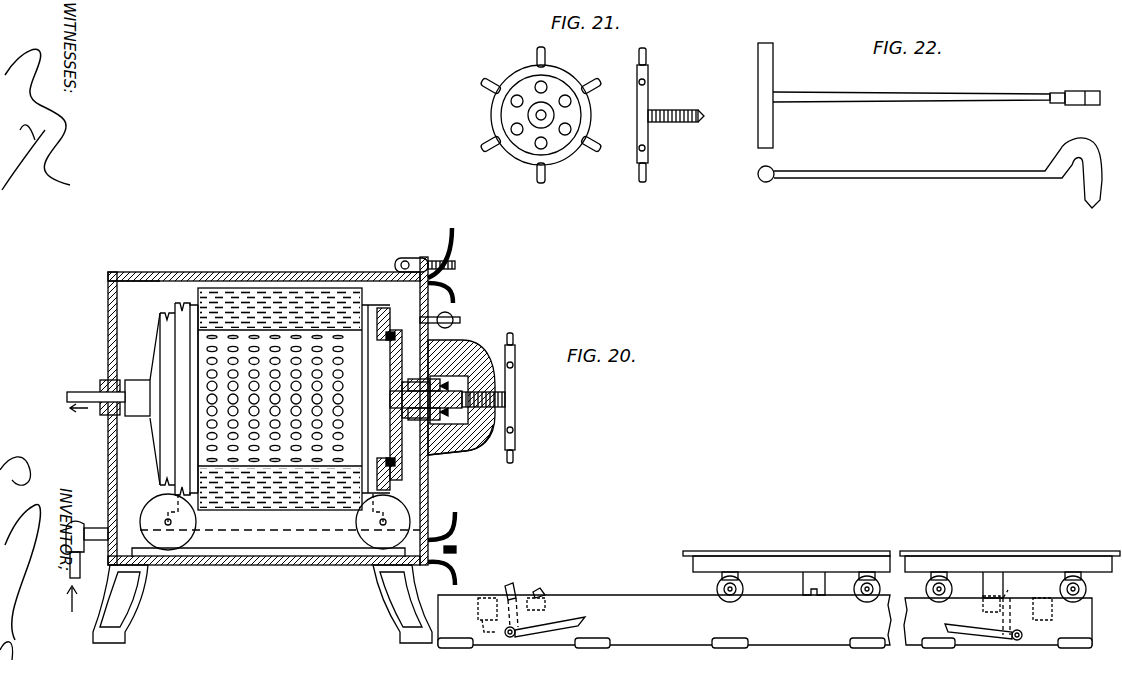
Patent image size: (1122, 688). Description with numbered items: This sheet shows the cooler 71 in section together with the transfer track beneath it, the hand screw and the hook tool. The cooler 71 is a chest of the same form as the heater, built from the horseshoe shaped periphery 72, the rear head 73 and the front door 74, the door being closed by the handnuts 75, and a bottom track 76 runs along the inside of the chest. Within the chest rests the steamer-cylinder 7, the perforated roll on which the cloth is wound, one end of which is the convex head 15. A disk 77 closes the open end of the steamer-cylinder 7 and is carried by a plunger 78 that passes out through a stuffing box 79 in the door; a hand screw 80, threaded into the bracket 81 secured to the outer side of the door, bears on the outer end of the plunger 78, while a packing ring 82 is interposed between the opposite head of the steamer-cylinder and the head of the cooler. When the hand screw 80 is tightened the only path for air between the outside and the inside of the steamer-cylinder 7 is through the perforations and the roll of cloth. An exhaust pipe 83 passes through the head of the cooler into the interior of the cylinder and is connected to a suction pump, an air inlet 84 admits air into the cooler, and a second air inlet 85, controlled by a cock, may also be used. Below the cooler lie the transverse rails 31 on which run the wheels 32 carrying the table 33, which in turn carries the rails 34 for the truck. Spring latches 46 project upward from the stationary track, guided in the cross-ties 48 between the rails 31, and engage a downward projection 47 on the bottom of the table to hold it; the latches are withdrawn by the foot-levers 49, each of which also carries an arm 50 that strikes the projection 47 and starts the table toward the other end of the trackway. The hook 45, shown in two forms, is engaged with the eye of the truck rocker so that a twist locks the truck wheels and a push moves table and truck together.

In FIG. 20, the steamer-cylinder 7 is at (294, 399).
In FIG. 20, the head 15 is at (153, 420).
In FIG. 20, the rails 31 is at (765, 621).
In FIG. 20, the wheels 32 is at (744, 587).
In FIG. 20, the table 33 is at (902, 565).
In FIG. 20, the rails 34 is at (825, 556).
In FIG. 22, the hook 45 is at (930, 125).
In FIG. 20, the spring latches 46 is at (541, 593).
In FIG. 20, the downward projection 47 is at (806, 597).
In FIG. 20, the cross-ties 48 is at (548, 600).
In FIG. 20, the foot-levers 49 is at (580, 628).
In FIG. 20, the arm 50 is at (513, 598).
In FIG. 20, the cooler 71 is at (268, 272).
In FIG. 20, the horseshoe shaped periphery 72 is at (148, 272).
In FIG. 20, the rear head 73 is at (108, 336).
In FIG. 20, the front door 74 is at (428, 506).
In FIG. 20, the handnuts 75 is at (455, 294).
In FIG. 20, the bottom track 76 is at (158, 530).
In FIG. 20, the disk 77 is at (395, 332).
In FIG. 20, the plunger 78 is at (412, 379).
In FIG. 20, the stuffing box 79 is at (443, 452).
In FIG. 20, the hand screw 80 is at (515, 399).
In FIG. 21, the hand screw 80 is at (675, 103).
In FIG. 20, the bracket 81 is at (466, 362).
In FIG. 20, the packing ring 82 is at (124, 381).
In FIG. 20, the exhaust pipe 83 is at (72, 392).
In FIG. 20, the air inlet 84 is at (77, 522).
In FIG. 20, the air inlet 85 is at (458, 319).